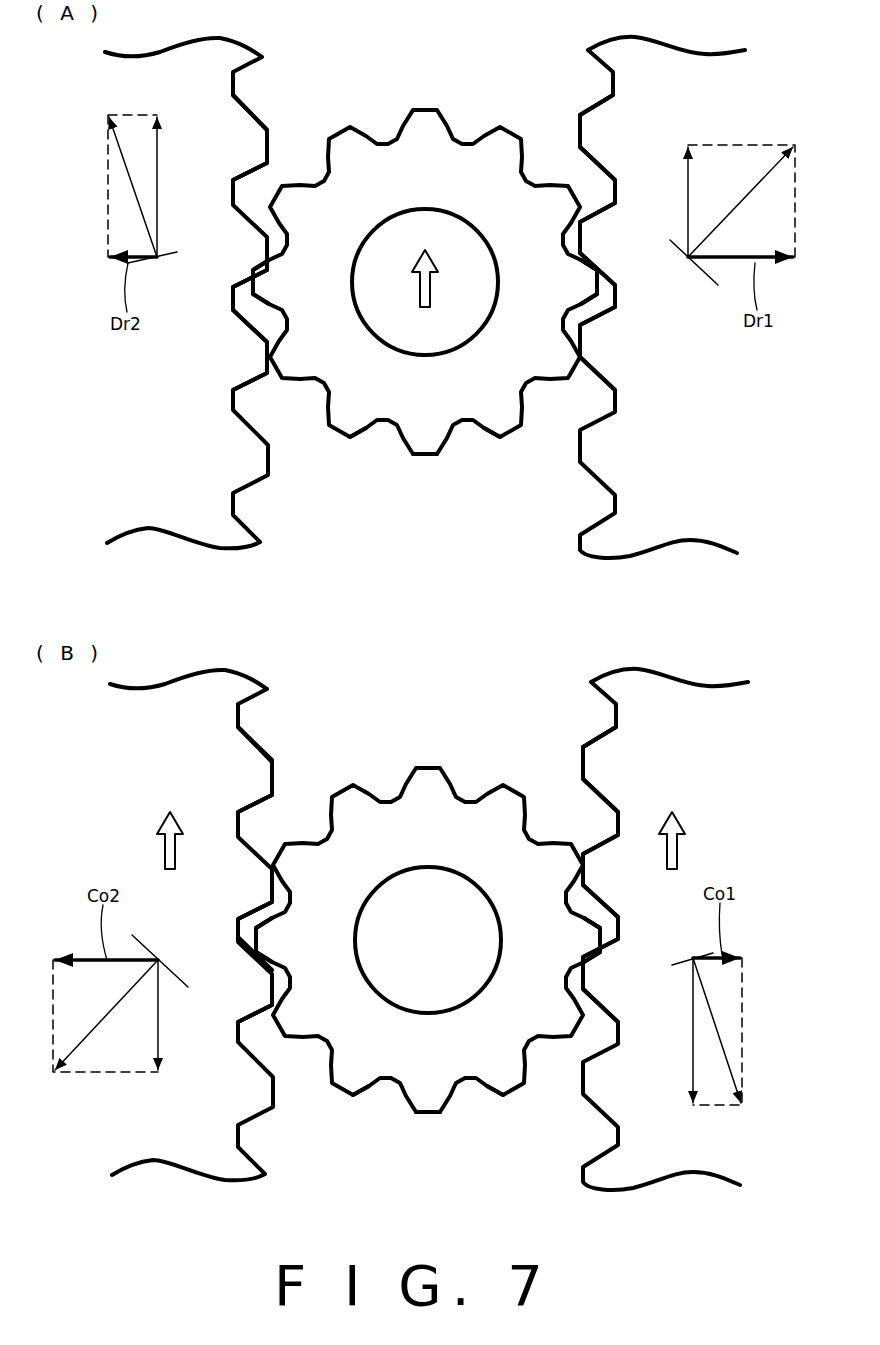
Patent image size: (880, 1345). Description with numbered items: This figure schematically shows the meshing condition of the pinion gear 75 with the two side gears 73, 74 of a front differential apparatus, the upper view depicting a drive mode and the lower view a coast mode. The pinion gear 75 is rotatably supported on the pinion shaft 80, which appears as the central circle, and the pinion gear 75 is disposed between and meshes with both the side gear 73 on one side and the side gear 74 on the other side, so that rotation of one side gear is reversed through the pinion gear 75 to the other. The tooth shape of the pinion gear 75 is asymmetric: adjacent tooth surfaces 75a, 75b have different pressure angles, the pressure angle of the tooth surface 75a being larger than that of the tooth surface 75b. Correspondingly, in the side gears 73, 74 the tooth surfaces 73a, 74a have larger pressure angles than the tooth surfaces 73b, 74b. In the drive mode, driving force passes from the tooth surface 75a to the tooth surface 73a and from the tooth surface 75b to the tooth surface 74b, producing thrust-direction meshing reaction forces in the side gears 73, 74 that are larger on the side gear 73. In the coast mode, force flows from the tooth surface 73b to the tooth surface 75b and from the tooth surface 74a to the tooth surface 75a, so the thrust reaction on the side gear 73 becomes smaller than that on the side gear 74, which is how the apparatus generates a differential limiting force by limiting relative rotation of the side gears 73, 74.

The side gear 73 is at (700, 483).
The tooth surface 73a is at (590, 162).
The tooth surface 73b is at (598, 105).
The side gear 74 is at (170, 482).
The tooth surface 74a is at (258, 108).
The tooth surface 74b is at (257, 173).
The pinion gear 75 is at (473, 152).
The tooth surface 75a is at (263, 310).
The tooth surface 75b is at (263, 273).
The pinion shaft 80 is at (460, 335).